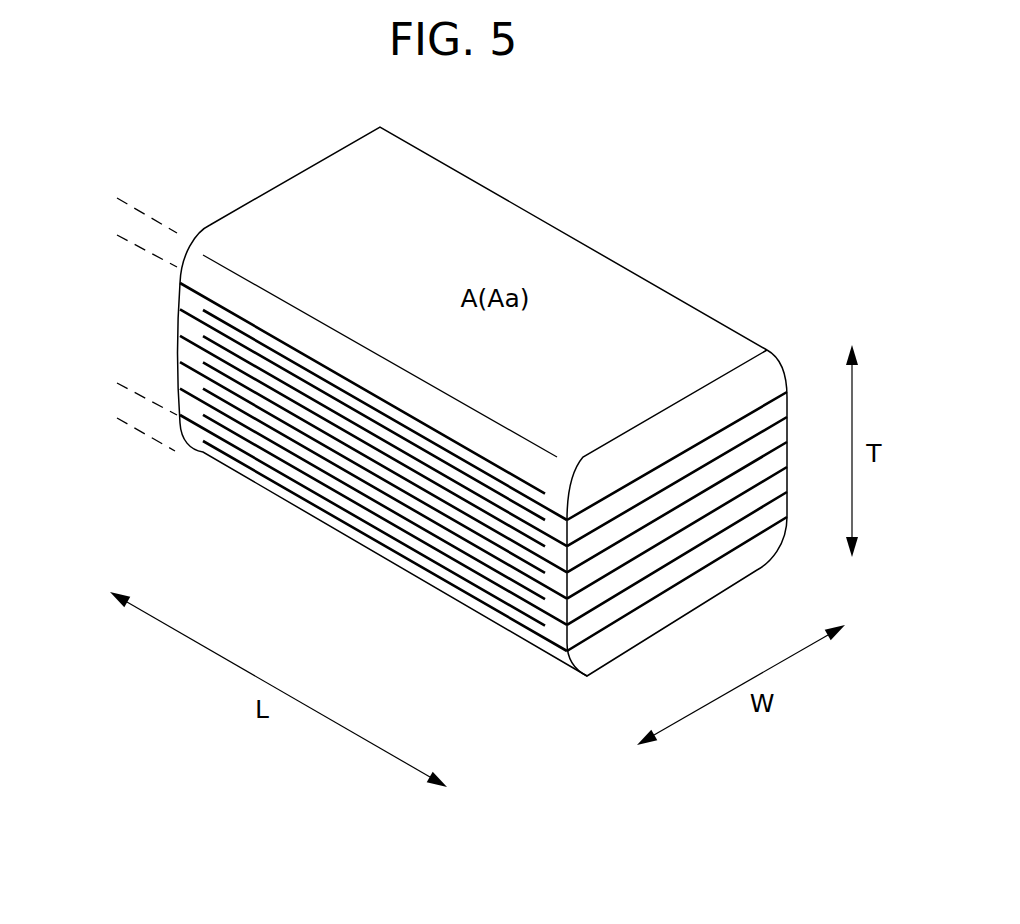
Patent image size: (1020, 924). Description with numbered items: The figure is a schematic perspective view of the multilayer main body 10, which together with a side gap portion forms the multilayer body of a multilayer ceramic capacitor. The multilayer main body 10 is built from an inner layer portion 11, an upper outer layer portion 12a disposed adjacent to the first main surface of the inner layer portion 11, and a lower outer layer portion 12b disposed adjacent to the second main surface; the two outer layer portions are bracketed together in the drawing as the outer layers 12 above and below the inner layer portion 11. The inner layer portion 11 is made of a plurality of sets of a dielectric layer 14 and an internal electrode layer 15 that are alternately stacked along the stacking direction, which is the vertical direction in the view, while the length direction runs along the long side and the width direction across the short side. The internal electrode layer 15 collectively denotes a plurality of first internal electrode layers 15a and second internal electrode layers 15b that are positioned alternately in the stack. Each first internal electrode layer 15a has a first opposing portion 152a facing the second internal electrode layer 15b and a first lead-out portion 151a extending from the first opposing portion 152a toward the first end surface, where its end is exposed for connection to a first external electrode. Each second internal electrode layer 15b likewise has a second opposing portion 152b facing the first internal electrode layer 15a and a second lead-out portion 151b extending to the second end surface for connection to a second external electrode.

The multilayer main body 10 is at (660, 222).
The inner layer portion 11 is at (113, 377).
The external electrode 12 is at (113, 233).
The upper outer layer portion 12a is at (105, 232).
The lower outer layer portion 12b is at (104, 417).
The dielectric layer 14 is at (350, 402).
The internal electrode layer 15 is at (483, 417).
The first internal electrode layer 15a is at (182, 128).
The second internal electrode layer 15b is at (420, 707).
The first lead-out portion 151a is at (195, 285).
The first opposing portion 152a is at (243, 320).
The second lead-out portion 151b is at (557, 510).
The second opposing portion 152b is at (515, 490).